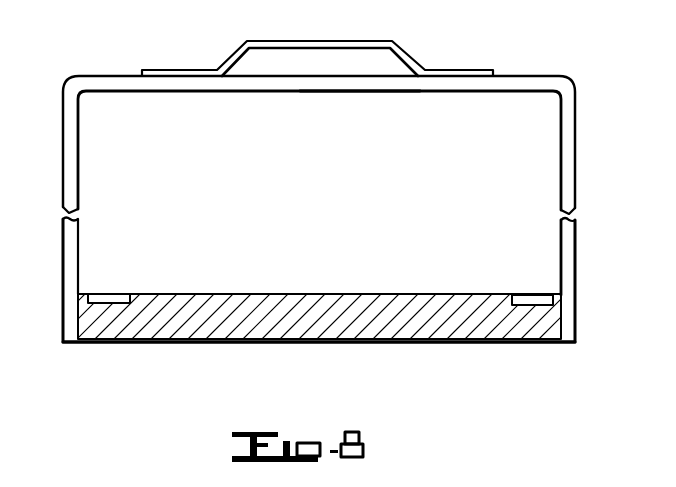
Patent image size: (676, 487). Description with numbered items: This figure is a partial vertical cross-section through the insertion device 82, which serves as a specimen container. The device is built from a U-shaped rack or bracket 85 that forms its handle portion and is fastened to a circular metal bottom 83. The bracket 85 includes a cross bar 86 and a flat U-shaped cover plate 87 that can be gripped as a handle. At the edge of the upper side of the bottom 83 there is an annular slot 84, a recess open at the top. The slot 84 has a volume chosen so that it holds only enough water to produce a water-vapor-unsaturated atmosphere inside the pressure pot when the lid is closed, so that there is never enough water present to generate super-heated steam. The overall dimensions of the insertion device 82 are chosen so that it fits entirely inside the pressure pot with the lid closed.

The insertion device 82 is at (246, 347).
The circular metal bottom 83 is at (362, 308).
The annular slot 84 is at (517, 299).
The U-shape rack or bracket 85 is at (60, 163).
The cross bar 86 is at (332, 84).
The flat U-shaped cover plate 87 is at (400, 45).